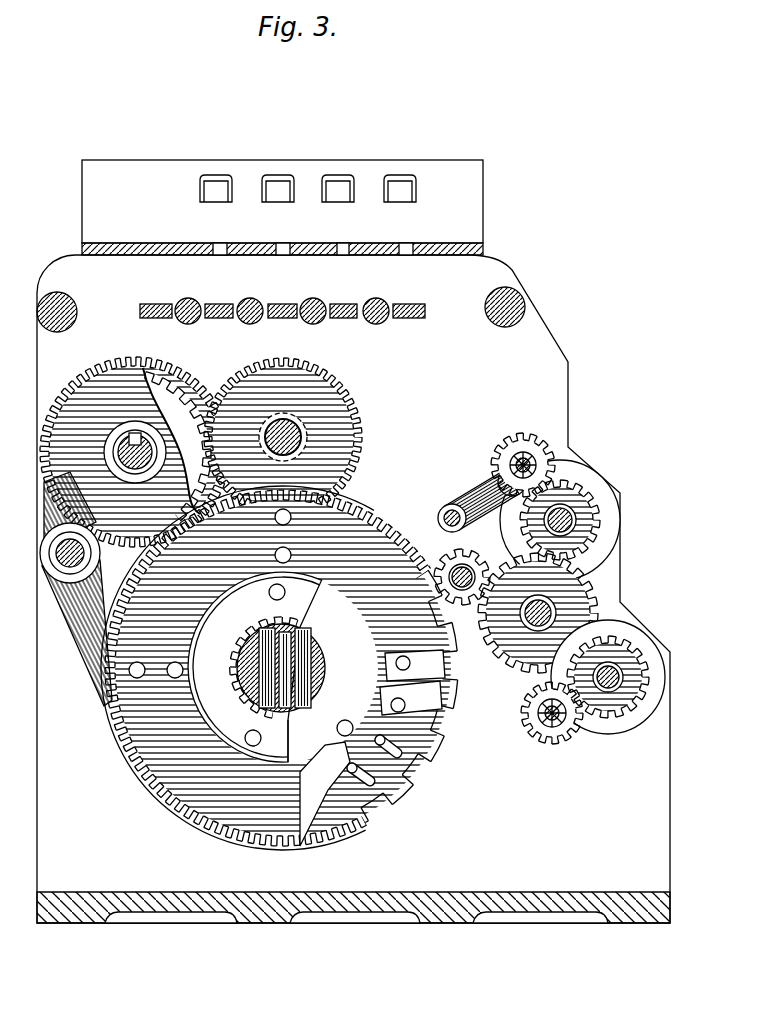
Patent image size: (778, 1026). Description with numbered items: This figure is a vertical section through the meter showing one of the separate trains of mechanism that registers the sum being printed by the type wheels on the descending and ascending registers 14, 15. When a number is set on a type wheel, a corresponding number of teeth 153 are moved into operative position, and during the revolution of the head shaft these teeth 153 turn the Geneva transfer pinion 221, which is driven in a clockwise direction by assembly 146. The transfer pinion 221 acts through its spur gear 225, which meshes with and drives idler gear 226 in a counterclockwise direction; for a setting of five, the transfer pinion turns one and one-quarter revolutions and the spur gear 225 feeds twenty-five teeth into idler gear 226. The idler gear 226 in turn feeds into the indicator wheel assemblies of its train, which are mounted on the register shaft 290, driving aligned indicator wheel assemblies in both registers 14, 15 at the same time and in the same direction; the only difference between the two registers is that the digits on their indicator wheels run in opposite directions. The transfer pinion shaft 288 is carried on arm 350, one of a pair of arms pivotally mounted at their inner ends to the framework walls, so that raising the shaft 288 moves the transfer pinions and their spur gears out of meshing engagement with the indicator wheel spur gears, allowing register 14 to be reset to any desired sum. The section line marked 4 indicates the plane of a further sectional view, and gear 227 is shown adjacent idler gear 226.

The descending register 14 is at (604, 481).
The ascending register 15 is at (654, 641).
The assembly 146 is at (372, 503).
The teeth 153 is at (432, 702).
The Geneva transfer pinion 221 is at (451, 551).
The spur gear 225 is at (470, 557).
The idler gear 226 is at (592, 592).
The gear 227 is at (574, 613).
The transfer pinion shaft 288 is at (522, 458).
The register shaft 290 is at (574, 523).
The arm 350 is at (492, 494).
The section line 4- 4 is at (682, 374).